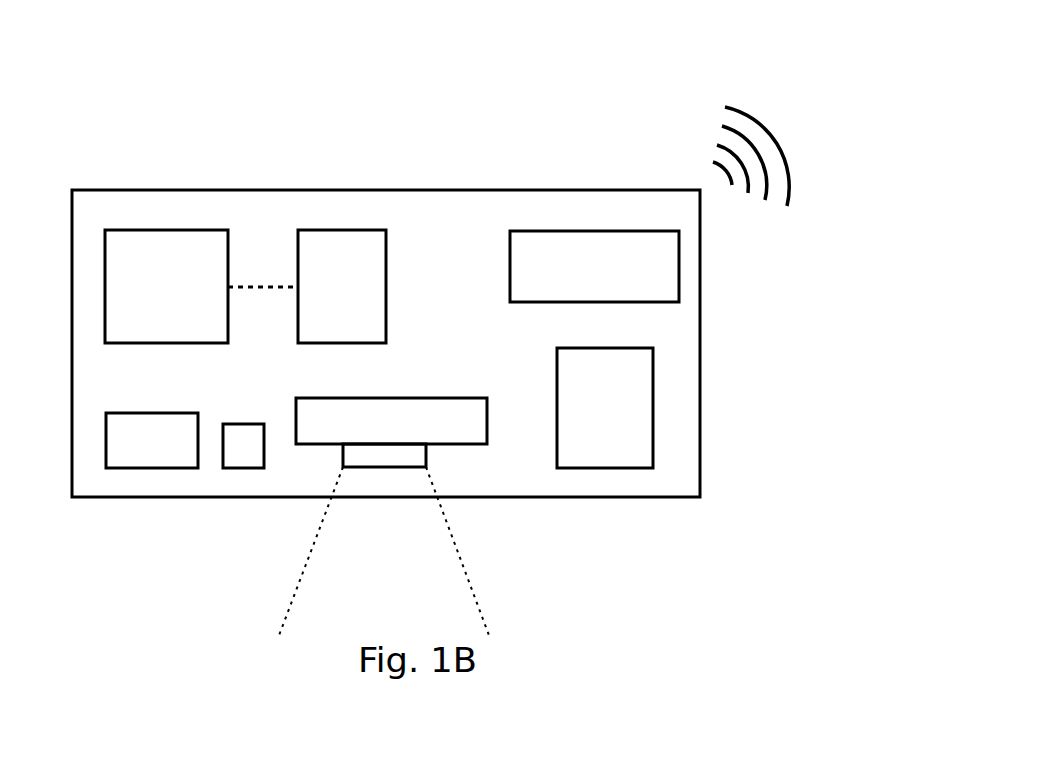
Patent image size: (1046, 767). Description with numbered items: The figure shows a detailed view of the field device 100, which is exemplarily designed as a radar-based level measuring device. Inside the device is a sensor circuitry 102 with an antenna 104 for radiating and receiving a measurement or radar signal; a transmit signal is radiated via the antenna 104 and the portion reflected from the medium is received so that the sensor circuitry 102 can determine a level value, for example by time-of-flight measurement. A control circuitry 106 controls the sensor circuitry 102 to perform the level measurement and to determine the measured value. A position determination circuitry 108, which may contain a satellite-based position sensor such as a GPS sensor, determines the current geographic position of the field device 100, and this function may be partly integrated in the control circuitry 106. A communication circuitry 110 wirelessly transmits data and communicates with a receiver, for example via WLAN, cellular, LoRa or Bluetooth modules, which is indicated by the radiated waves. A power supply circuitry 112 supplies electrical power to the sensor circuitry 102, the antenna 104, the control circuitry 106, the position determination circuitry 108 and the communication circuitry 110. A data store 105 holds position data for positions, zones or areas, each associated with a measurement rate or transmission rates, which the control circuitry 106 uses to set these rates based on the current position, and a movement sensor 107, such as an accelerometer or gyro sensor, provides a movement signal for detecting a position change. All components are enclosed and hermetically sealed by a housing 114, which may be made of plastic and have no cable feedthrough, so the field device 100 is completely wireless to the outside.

The field device 100 is at (694, 92).
The sensor circuitry 102 is at (453, 396).
The antenna 104 is at (433, 458).
The data store 105 is at (135, 470).
The control circuitry 106 is at (157, 228).
The movement sensor 107 is at (233, 470).
The position determination circuitry 108 is at (340, 228).
The communication circuitry 110 is at (585, 230).
The power supply circuitry 112 is at (655, 385).
The housing 114 is at (701, 292).